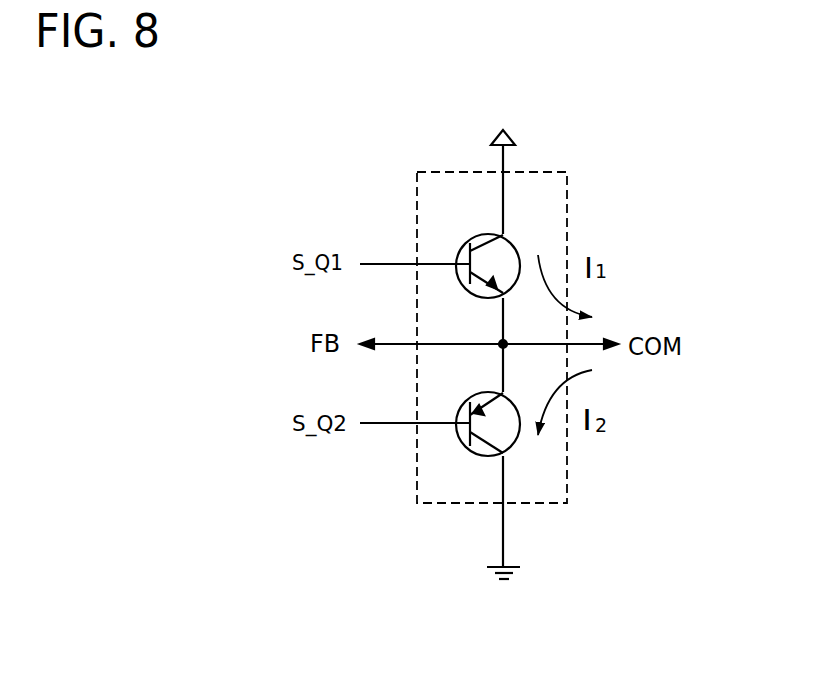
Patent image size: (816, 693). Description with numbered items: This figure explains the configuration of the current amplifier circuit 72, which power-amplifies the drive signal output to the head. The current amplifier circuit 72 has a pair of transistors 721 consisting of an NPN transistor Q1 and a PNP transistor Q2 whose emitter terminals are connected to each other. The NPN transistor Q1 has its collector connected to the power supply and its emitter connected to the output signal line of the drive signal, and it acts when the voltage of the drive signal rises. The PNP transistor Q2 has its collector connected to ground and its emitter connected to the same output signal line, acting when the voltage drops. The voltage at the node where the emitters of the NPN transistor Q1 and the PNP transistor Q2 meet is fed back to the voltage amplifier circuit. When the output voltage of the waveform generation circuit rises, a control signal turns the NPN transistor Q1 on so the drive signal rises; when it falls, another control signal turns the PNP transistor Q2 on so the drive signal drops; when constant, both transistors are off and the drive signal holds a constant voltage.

The current amplifier circuit 72 is at (537, 172).
The pair of transistors 721 is at (437, 98).
The NPN transistor Q1 is at (483, 230).
The PNP transistor Q2 is at (486, 392).